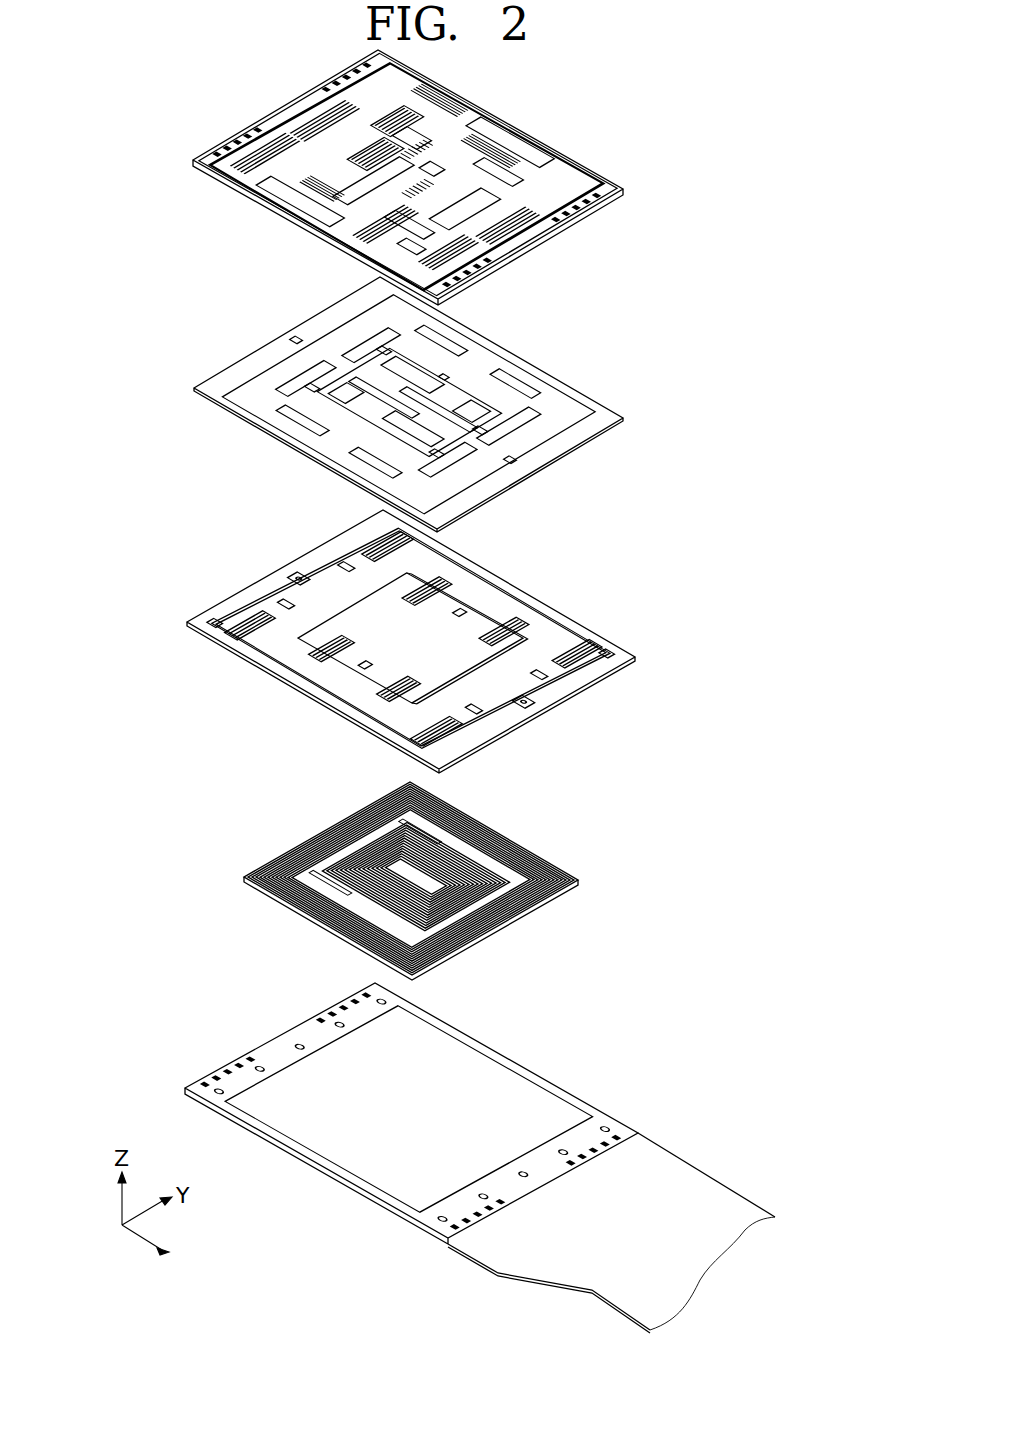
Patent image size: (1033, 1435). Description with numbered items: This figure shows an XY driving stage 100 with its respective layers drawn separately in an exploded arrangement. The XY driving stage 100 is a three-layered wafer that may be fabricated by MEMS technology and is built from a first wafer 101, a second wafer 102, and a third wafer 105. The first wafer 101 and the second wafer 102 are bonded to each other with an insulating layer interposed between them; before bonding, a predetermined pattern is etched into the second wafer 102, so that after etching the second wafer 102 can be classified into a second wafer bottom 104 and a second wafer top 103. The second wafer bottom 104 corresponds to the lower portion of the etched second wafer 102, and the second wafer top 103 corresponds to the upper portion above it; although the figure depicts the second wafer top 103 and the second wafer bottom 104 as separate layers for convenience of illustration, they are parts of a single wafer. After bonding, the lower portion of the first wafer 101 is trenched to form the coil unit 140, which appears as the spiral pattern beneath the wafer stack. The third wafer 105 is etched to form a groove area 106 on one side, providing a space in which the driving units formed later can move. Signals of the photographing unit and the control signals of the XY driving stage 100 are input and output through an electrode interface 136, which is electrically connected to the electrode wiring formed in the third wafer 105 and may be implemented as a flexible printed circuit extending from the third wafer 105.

The XY driving stage 100 is at (718, 78).
The first wafer 101 is at (592, 633).
The second wafer 102 is at (641, 300).
The second wafer top 103 is at (546, 232).
The second wafer bottom 104 is at (538, 367).
The third wafer 105 is at (593, 1110).
The groove area 106 is at (522, 1095).
The electrode interface 136 is at (673, 1155).
The coil unit 140 is at (534, 853).